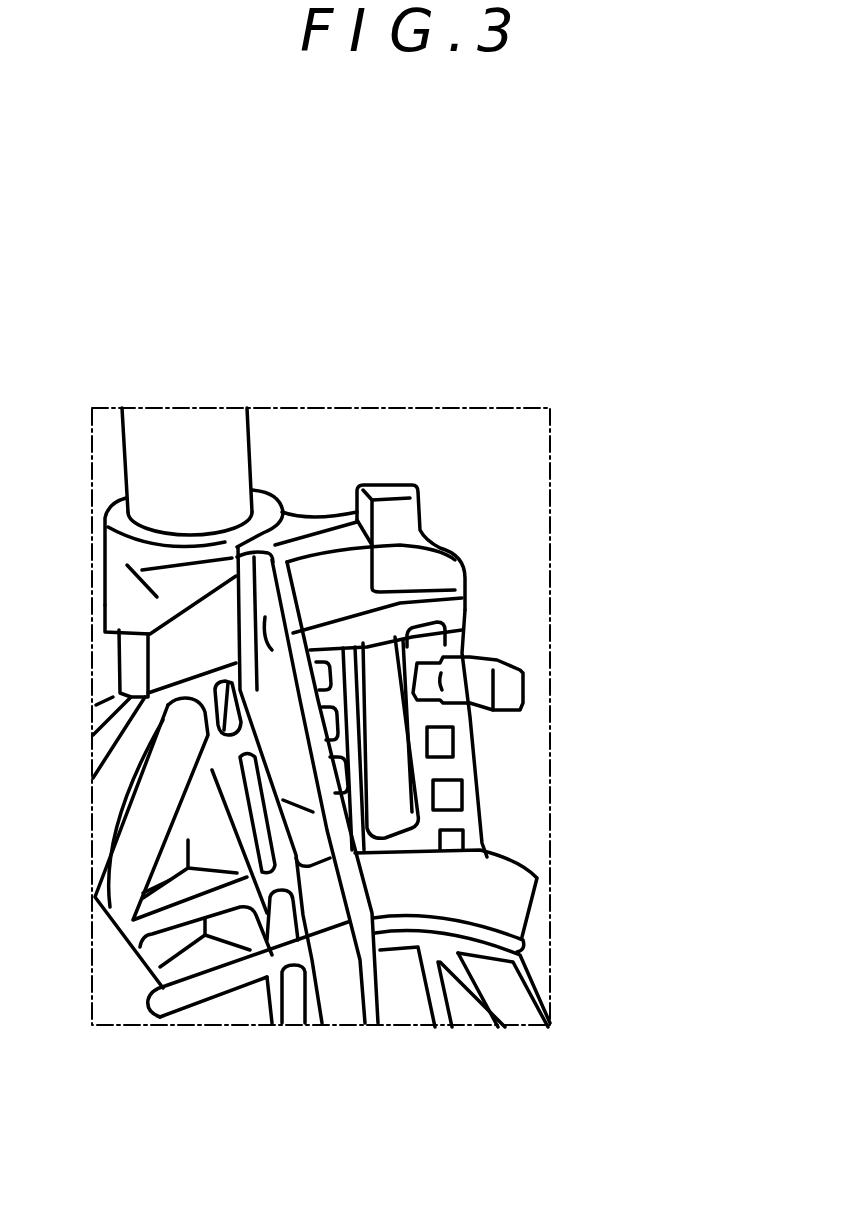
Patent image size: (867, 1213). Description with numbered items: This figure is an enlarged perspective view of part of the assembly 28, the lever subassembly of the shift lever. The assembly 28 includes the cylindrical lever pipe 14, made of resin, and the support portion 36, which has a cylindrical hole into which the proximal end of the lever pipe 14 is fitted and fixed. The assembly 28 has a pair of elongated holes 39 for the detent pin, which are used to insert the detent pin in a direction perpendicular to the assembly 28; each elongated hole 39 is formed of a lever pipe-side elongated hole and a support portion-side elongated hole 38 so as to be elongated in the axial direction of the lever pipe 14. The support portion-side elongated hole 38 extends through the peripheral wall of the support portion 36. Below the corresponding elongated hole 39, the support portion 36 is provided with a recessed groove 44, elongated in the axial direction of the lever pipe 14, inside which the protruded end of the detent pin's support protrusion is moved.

The assembly 28 is at (662, 262).
The lever pipe 14 is at (153, 455).
The elongated hole 39 is at (283, 564).
The support portion-side elongated hole 38 is at (263, 620).
The support portion 36 is at (494, 787).
The recessed groove 44 is at (372, 1003).